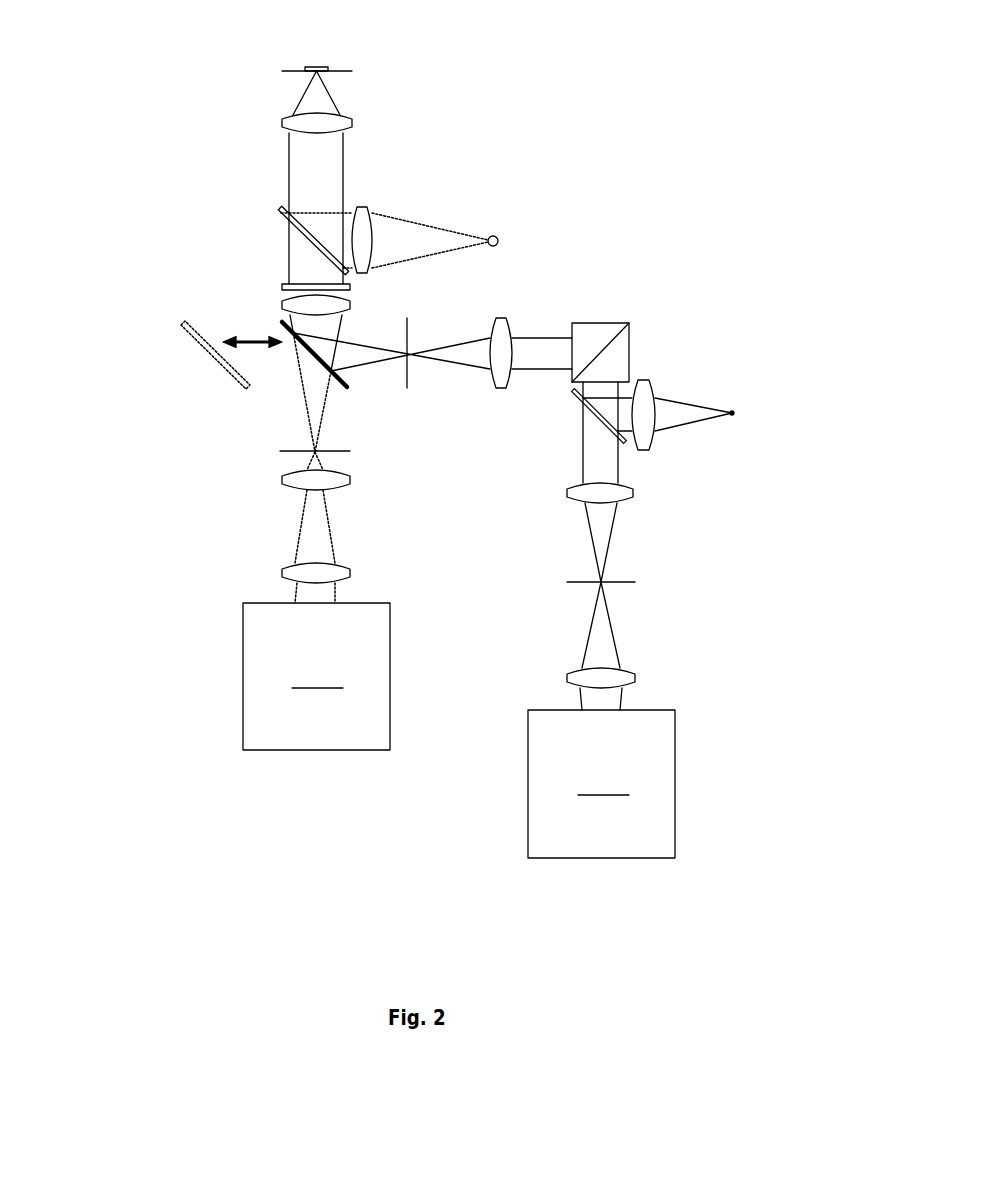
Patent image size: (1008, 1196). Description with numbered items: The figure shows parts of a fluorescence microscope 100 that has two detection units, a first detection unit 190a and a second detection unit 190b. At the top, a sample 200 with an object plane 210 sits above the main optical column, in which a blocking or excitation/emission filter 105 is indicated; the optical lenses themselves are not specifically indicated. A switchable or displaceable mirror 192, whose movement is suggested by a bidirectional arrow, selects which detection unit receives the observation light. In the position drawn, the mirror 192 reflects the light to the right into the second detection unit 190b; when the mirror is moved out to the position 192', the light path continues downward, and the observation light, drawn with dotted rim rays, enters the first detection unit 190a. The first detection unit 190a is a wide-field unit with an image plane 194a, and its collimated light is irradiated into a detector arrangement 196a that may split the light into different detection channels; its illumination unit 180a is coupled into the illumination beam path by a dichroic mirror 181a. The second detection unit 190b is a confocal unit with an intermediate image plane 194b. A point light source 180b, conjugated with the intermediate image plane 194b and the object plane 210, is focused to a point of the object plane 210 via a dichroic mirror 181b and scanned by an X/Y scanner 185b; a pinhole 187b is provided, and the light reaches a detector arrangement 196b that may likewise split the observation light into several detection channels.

The fluorescence microscope 100 is at (650, 172).
The blocking or excitation/emission filter 105 is at (282, 287).
The illumination unit 180a is at (497, 236).
The point light source 180b is at (732, 413).
The dichroic mirror 181a is at (299, 231).
The dichroic mirror 181b is at (600, 418).
The X/Y scanner 185b is at (590, 322).
The pinhole 187b is at (627, 583).
The first detection unit 190a is at (257, 519).
The second detection unit 190b is at (545, 542).
The switchable or displaceable mirror 192 is at (300, 354).
The mirror in moved-out position 192' is at (214, 355).
The image plane 194a is at (305, 450).
The intermediate image plane 194b is at (407, 385).
The detector arrangement 196a is at (316, 676).
The detector arrangement 196b is at (601, 784).
The sample 200 is at (312, 67).
The object plane 210 is at (337, 68).